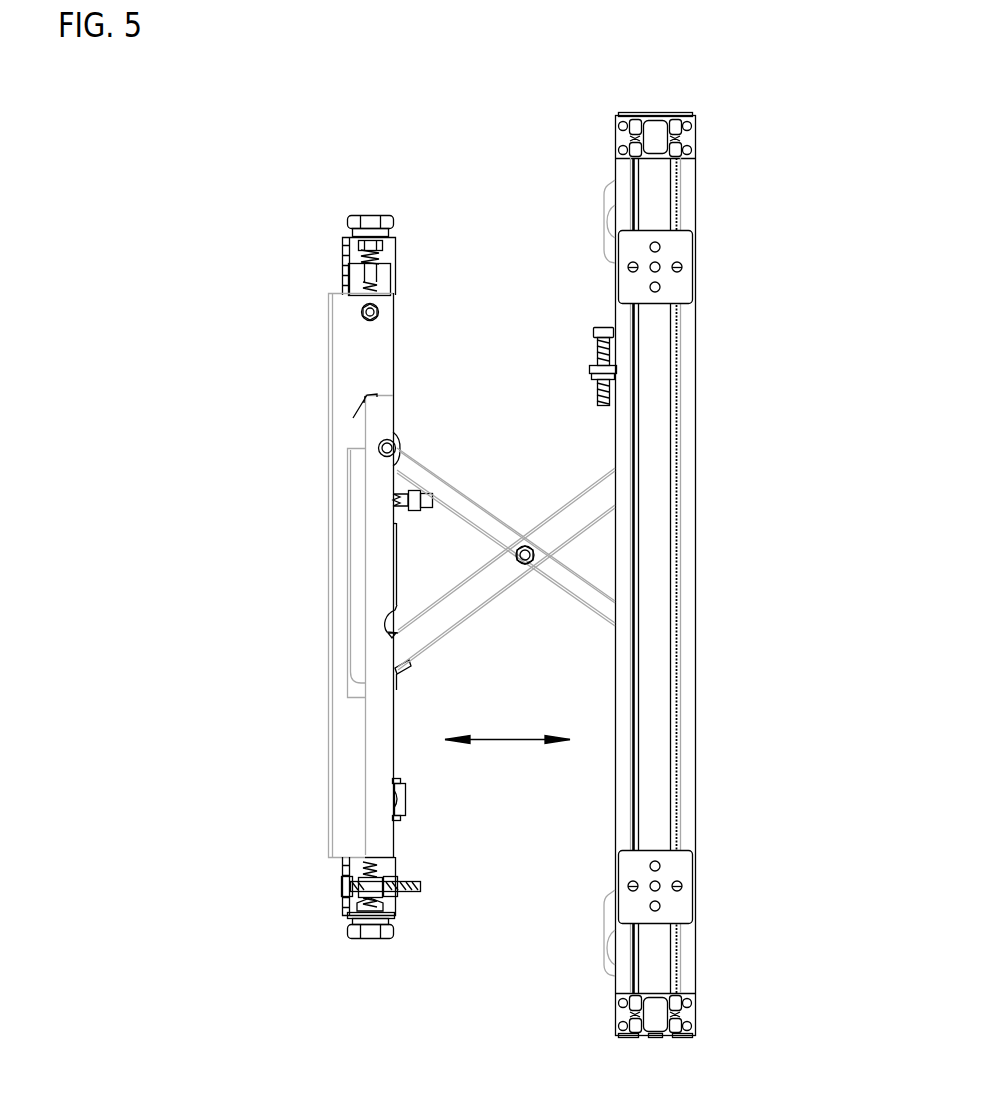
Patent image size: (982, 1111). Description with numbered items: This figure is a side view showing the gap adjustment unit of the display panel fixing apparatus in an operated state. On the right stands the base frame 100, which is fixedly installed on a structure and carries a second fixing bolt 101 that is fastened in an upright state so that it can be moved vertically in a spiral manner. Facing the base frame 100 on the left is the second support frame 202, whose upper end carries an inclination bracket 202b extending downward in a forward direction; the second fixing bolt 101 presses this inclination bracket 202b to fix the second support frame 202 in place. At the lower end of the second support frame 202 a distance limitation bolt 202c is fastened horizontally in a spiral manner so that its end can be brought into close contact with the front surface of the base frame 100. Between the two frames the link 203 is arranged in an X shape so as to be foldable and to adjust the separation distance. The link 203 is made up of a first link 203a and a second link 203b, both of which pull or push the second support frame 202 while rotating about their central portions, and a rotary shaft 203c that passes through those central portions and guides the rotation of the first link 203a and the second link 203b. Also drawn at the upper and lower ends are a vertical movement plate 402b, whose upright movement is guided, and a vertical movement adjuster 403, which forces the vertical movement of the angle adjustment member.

The base frame 100 is at (660, 448).
The second fixing bolt 101 is at (608, 345).
The second support frame 202 is at (363, 473).
The inclination bracket 202b is at (360, 406).
The distance limitation bolt 202c is at (350, 881).
The link 203 is at (630, 585).
The first link 203a is at (587, 513).
The second link 203b is at (570, 598).
The rotary shaft 203c is at (531, 559).
The vertical movement plate 402b is at (356, 265).
The vertical movement adjuster 403 is at (372, 215).